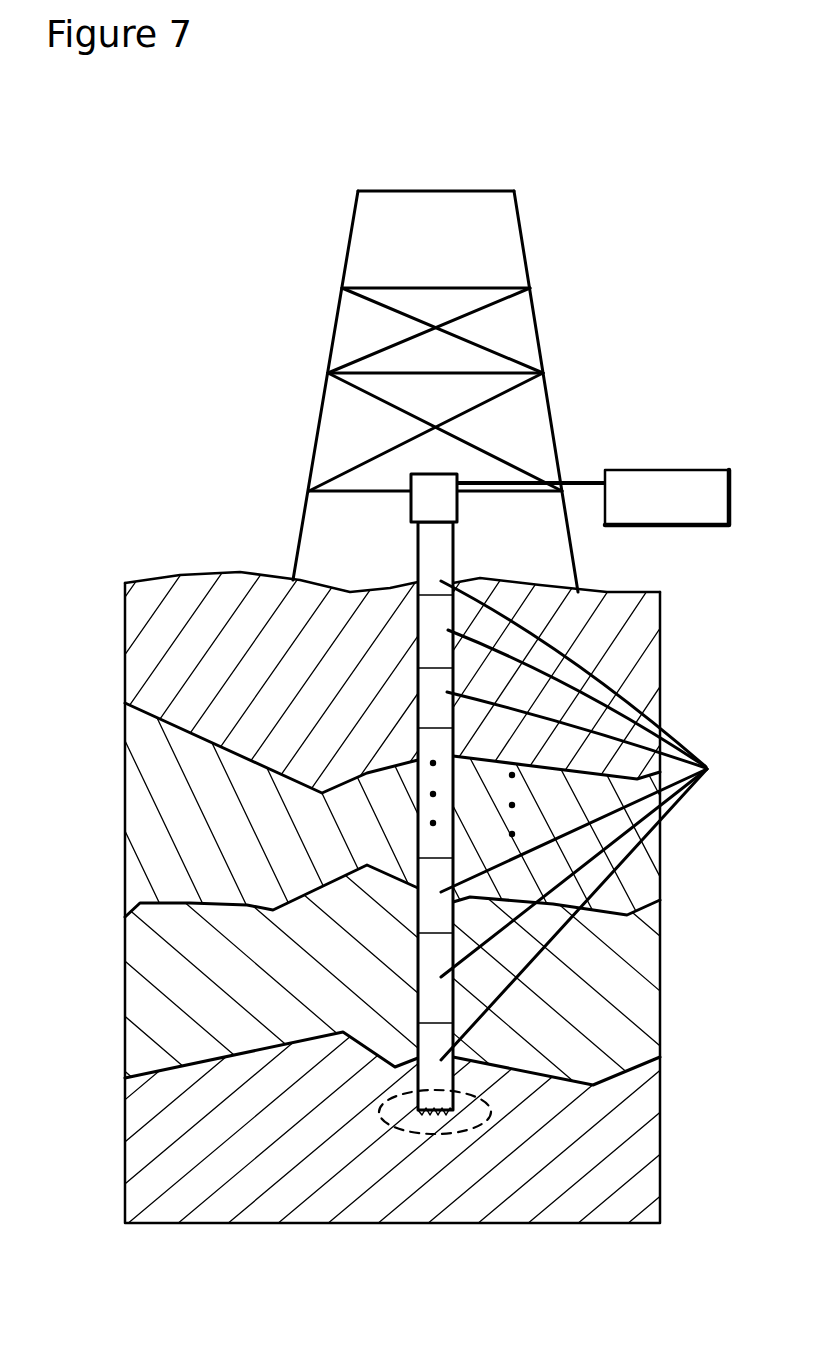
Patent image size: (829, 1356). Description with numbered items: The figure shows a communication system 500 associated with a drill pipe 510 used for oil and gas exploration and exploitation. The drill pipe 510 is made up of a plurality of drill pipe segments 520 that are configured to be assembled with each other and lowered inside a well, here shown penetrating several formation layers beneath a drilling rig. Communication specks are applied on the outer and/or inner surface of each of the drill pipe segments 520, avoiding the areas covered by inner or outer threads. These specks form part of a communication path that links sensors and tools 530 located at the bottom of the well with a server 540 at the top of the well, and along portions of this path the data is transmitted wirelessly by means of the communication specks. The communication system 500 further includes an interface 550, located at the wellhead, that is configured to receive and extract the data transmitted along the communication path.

The communication system 500 is at (187, 473).
The drill pipe 510 is at (418, 830).
The drill pipe segments 520 is at (594, 820).
The sensors and tools 530 is at (449, 1135).
The server 540 is at (655, 470).
The interface 550 is at (411, 509).